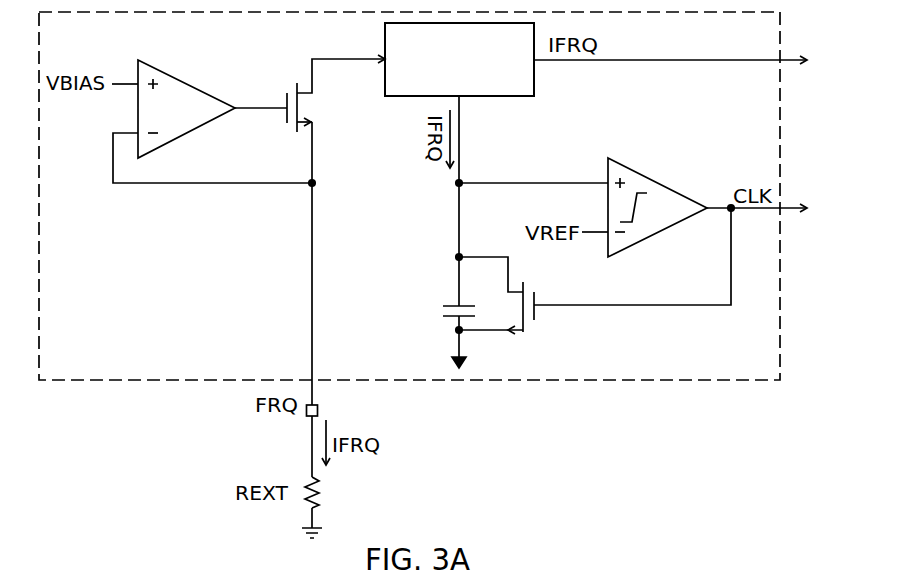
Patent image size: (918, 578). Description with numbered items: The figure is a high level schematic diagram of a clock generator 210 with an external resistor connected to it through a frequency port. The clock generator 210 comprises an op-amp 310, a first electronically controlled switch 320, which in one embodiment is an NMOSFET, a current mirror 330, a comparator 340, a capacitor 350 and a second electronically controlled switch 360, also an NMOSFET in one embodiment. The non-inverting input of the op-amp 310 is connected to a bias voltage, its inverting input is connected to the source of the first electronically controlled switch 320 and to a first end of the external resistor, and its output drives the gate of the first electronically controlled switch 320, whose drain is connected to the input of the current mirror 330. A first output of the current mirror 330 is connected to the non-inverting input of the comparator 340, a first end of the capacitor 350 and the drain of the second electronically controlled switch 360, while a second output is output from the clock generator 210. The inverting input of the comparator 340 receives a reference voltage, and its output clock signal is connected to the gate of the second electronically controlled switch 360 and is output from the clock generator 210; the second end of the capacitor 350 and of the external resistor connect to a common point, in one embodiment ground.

The clock generator 210 is at (780, 85).
The op-amp 310 is at (190, 83).
The first electronically controlled switch 320 is at (297, 132).
The current mirror 330 is at (385, 85).
The comparator 340 is at (631, 167).
The capacitor 350 is at (443, 306).
The second electronically controlled switch 360 is at (535, 323).